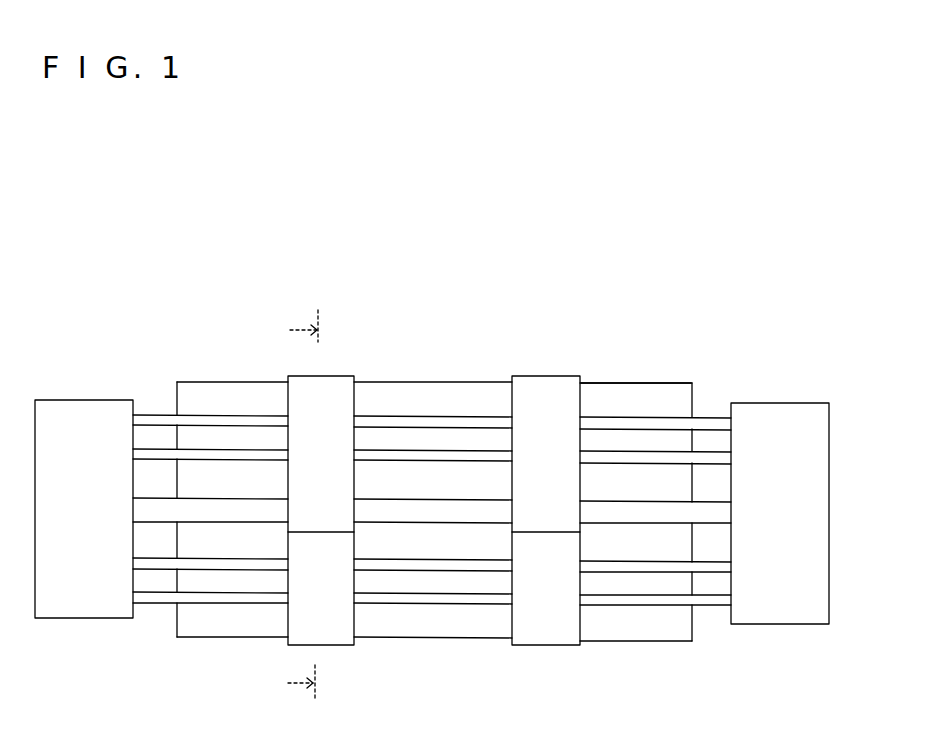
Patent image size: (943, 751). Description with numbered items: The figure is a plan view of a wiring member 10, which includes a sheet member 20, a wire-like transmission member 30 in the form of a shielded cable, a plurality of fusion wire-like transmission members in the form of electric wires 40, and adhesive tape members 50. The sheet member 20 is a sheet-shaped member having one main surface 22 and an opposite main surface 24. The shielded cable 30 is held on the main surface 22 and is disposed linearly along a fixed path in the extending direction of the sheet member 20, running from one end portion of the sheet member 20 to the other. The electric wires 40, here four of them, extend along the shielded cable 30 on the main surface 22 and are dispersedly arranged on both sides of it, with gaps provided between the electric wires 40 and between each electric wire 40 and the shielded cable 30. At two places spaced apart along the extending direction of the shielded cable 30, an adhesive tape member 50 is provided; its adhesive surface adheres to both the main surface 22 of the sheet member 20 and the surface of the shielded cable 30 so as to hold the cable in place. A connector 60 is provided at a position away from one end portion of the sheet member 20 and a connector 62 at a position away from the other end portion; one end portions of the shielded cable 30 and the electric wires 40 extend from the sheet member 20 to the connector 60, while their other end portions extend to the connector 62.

The wiring member 10 is at (711, 276).
The sheet member 20 is at (600, 378).
The main surface 22 is at (643, 393).
The main surface 24 is at (677, 407).
The wire-like transmission member 30 is at (424, 498).
The fusion wire-like transmission member 40 is at (612, 432).
The adhesive tape member 50 is at (338, 388).
The connector 60 is at (85, 400).
The connector 62 is at (782, 403).